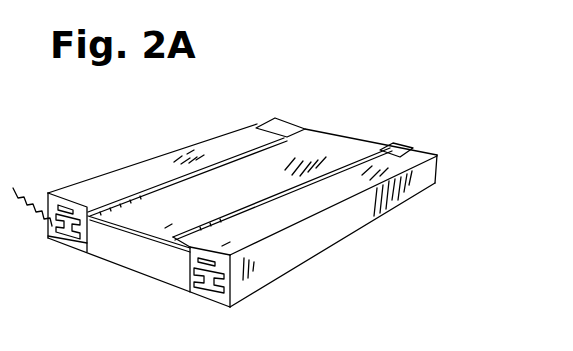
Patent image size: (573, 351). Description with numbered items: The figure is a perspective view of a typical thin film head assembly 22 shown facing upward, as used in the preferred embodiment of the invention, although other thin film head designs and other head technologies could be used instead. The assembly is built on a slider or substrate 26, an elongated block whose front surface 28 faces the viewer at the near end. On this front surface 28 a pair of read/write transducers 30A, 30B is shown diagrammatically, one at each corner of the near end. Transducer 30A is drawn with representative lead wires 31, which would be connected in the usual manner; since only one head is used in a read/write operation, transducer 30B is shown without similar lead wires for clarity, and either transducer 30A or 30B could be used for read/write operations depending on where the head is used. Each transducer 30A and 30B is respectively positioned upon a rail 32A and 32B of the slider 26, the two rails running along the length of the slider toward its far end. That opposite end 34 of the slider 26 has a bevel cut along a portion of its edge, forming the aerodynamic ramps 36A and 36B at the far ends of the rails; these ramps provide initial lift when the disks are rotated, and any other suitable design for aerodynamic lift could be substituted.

The thin film head assembly 22 is at (171, 128).
The slider 26 is at (117, 170).
The front surface 28 is at (142, 250).
The read/write transducer 30A is at (88, 217).
The read/write transducer 30B is at (240, 290).
The lead wires 31 is at (27, 196).
The rail 32A is at (221, 150).
The rail 32B is at (307, 205).
The opposite end 34 is at (440, 172).
The aerodynamic ramp 36A is at (283, 120).
The aerodynamic ramp 36B is at (412, 150).